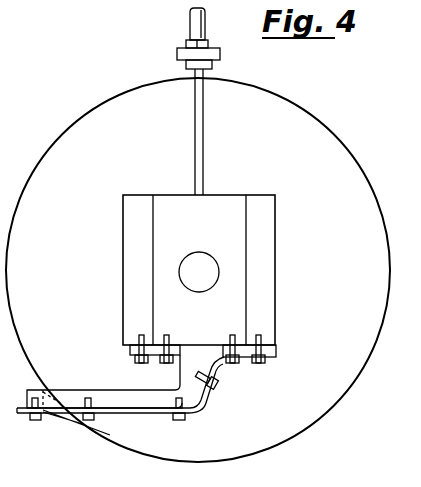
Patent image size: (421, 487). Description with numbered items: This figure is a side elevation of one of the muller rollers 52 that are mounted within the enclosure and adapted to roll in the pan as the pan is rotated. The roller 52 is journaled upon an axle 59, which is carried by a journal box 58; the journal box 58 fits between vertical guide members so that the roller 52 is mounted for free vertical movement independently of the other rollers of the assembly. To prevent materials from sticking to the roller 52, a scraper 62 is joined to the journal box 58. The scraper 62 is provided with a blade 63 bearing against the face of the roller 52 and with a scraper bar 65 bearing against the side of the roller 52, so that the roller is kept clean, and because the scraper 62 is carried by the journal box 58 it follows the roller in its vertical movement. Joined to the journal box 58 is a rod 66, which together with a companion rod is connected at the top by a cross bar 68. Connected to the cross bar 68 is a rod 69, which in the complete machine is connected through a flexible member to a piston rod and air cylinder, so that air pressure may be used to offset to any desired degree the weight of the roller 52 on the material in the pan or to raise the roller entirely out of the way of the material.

The muller roller 52 is at (105, 102).
The journal box 58 is at (137, 195).
The axle 59 is at (196, 262).
The scraper 62 is at (103, 392).
The blade 63 is at (78, 426).
The scraper bar 65 is at (158, 413).
The rod 66 is at (204, 148).
The cross bar 68 is at (177, 54).
The rod 69 is at (190, 21).